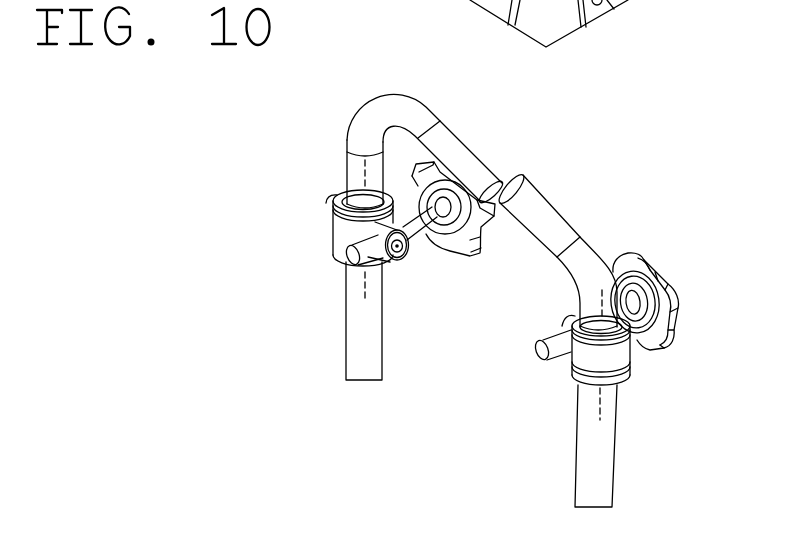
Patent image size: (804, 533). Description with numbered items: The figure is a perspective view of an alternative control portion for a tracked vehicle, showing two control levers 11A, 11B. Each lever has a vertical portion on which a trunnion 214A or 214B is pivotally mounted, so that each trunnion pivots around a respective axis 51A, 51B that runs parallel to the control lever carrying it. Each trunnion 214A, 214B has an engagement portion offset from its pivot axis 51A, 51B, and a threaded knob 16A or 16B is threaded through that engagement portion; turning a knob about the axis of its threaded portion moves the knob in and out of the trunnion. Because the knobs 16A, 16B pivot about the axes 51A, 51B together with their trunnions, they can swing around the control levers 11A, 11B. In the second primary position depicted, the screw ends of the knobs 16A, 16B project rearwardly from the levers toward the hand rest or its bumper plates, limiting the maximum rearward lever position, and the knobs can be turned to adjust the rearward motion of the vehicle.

The control lever 11A is at (373, 140).
The axis 51A is at (357, 168).
The trunnion 214A is at (353, 235).
The knob 16A is at (353, 263).
The control lever 11B is at (577, 257).
The axis 51B is at (605, 406).
The trunnion 214B is at (607, 352).
The knob 16B is at (673, 302).